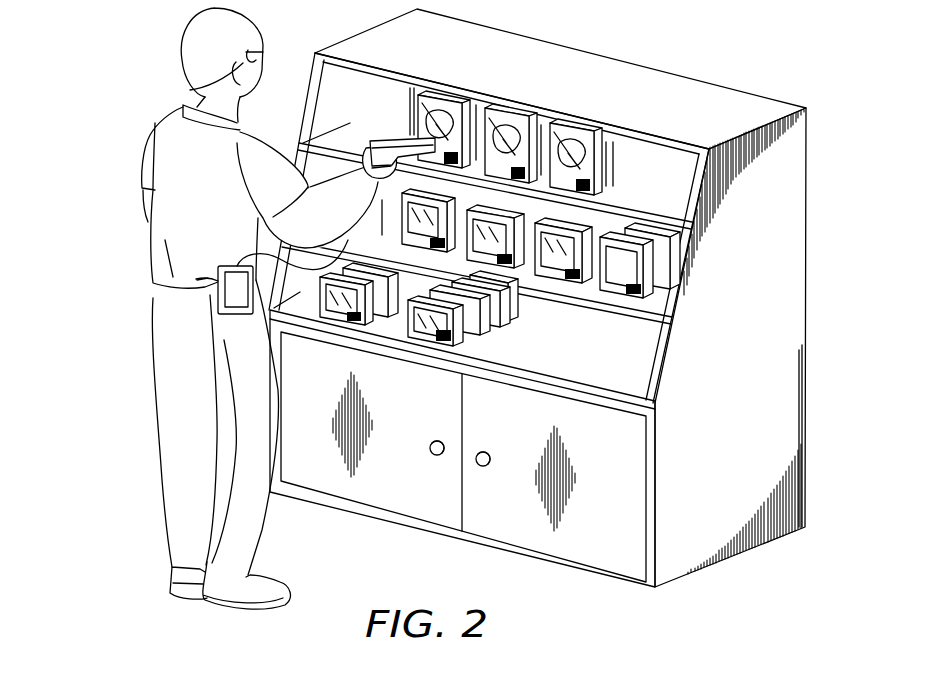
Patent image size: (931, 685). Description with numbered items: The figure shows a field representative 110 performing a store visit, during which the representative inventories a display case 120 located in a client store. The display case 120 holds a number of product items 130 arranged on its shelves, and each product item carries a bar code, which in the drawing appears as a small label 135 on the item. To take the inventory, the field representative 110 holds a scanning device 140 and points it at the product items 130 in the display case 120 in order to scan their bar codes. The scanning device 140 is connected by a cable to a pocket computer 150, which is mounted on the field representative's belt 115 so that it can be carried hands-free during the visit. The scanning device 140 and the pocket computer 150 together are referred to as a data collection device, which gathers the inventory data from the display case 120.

The field representative 110 is at (106, 78).
The belt 115 is at (228, 297).
The display case 120 is at (808, 171).
The product items 130 is at (455, 103).
The identification labels/tags 135 is at (598, 186).
The scanning device 140 is at (387, 142).
The pocket computer 150 is at (228, 265).